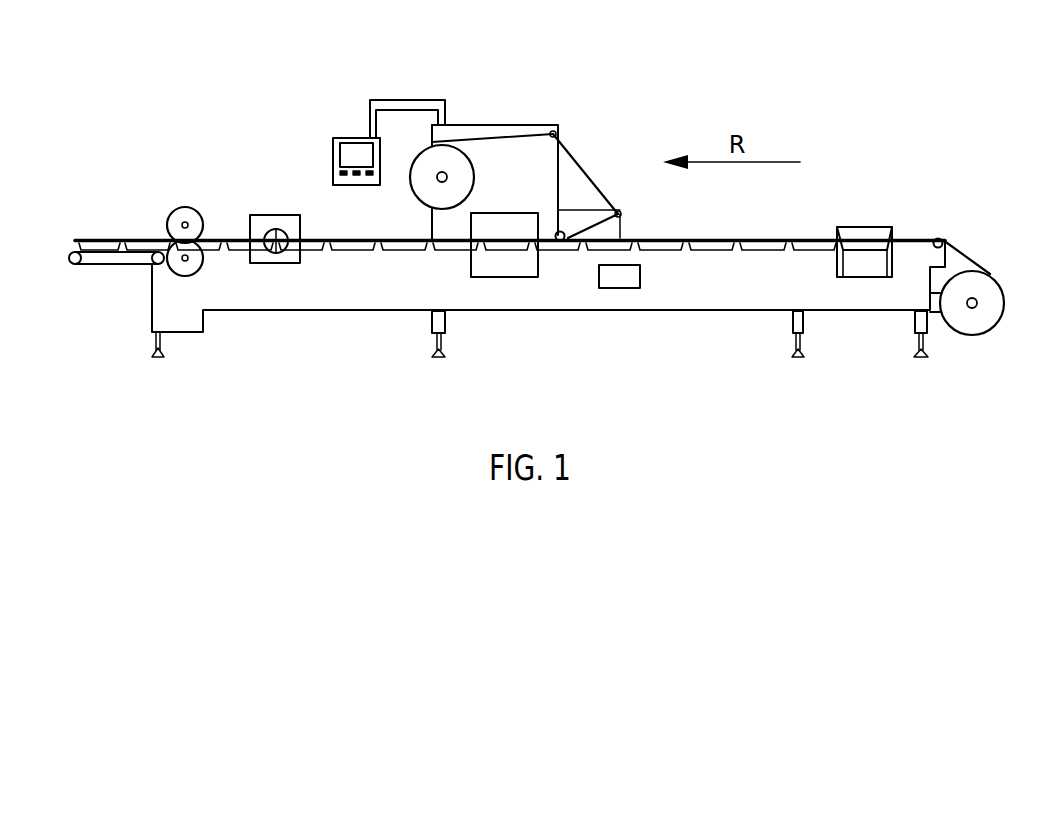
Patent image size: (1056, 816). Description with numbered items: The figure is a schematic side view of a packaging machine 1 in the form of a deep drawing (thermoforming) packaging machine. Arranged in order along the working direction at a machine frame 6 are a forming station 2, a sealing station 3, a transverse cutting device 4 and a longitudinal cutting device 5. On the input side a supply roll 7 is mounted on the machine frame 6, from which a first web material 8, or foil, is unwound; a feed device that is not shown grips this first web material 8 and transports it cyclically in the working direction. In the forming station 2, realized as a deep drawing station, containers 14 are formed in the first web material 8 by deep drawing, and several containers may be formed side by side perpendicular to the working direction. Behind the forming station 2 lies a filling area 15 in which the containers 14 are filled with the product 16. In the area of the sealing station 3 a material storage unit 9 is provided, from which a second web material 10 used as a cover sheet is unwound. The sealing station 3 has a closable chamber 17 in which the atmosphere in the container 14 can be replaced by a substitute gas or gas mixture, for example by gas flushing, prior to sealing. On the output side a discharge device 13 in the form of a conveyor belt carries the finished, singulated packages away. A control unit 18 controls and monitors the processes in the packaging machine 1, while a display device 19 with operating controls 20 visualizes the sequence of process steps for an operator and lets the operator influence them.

The packaging machine 1 is at (752, 57).
The forming station 2 is at (868, 232).
The sealing station 3 is at (492, 222).
The transverse cutting device 4 is at (265, 215).
The longitudinal cutting device 5 is at (183, 198).
The machine frame 6 is at (418, 318).
The supply roll 7 is at (982, 280).
The first web material 8 is at (962, 250).
The material storage unit 9 is at (427, 193).
The second web material 10 is at (528, 130).
The discharge device 13 is at (108, 268).
The containers 14 is at (857, 250).
The filling area 15 is at (684, 266).
The product 16 is at (725, 238).
The closable chamber 17 is at (502, 272).
The control unit 18 is at (620, 282).
The display device 19 is at (353, 138).
The operating controls 20 is at (333, 176).